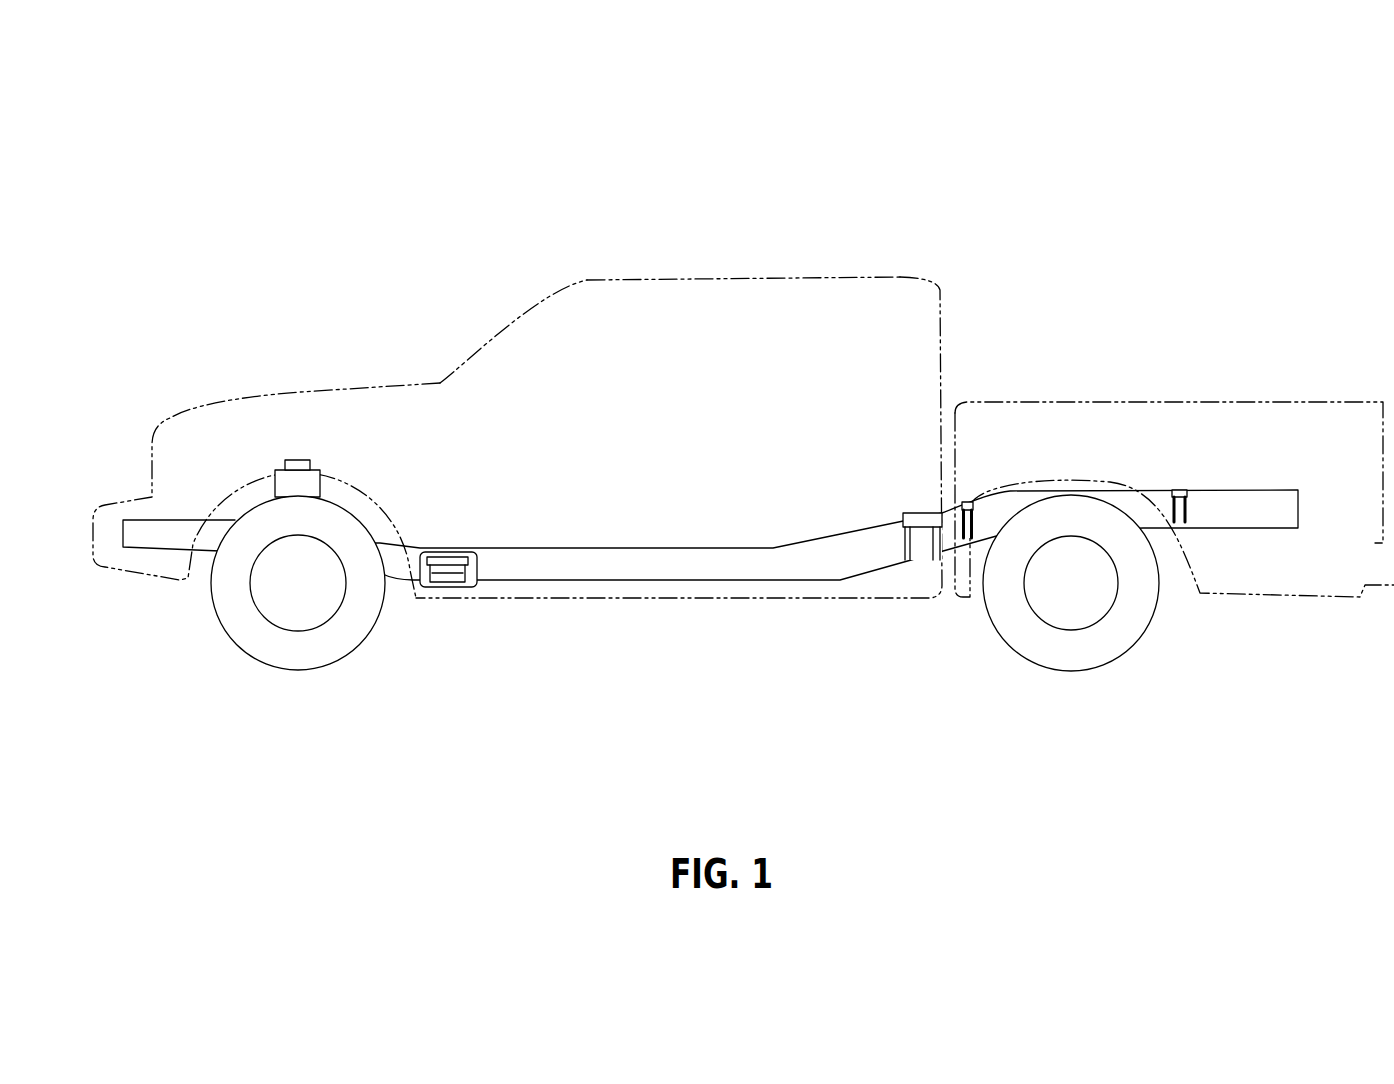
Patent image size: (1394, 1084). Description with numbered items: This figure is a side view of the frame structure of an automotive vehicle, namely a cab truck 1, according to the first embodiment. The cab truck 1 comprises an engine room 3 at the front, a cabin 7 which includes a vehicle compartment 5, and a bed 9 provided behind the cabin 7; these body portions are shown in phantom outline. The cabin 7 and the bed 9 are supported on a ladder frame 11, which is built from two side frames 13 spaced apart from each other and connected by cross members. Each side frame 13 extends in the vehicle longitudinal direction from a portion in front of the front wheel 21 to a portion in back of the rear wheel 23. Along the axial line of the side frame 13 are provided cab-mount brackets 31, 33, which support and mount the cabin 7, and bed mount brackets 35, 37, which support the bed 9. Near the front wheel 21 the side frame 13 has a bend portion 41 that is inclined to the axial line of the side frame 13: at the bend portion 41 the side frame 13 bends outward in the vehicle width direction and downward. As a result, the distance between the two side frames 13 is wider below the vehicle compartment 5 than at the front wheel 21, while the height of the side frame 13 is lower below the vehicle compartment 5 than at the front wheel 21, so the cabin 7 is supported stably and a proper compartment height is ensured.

The cab truck 1 is at (805, 215).
The engine room 3 is at (232, 394).
The vehicle compartment 5 is at (892, 262).
The cabin 7 is at (730, 275).
The bed 9 is at (1305, 404).
The ladder frame 11 is at (794, 597).
The side frame 13 is at (685, 565).
The front wheel 21 is at (231, 623).
The rear wheel 23 is at (1143, 618).
The cab-mount bracket 31 is at (477, 557).
The cab-mount bracket 33 is at (917, 513).
The bed mount bracket 35 is at (968, 502).
The bed mount bracket 37 is at (1180, 490).
The bend portion 41 is at (587, 674).